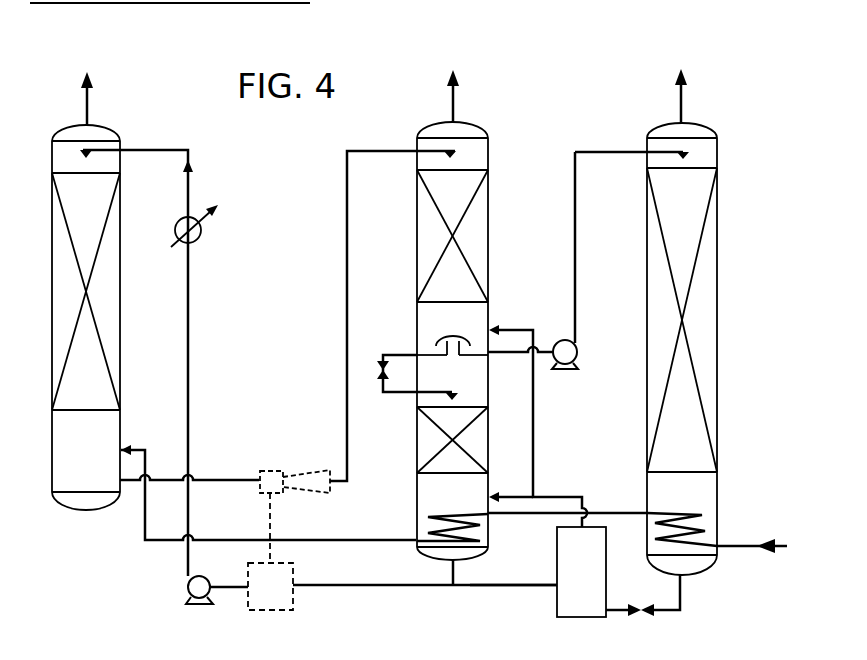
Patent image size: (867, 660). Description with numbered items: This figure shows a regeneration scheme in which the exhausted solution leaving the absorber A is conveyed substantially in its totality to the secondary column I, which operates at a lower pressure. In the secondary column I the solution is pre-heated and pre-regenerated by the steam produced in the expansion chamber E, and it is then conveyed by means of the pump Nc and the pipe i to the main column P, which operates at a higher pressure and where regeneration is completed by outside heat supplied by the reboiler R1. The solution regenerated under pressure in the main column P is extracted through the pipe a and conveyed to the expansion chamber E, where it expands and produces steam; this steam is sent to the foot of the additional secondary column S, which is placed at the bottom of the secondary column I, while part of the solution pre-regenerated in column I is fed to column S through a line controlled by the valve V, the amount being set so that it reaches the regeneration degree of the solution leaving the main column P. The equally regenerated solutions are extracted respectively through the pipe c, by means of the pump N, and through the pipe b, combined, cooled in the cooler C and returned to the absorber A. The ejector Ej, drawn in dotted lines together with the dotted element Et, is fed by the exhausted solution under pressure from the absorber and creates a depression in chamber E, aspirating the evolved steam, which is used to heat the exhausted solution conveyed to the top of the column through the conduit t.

The absorber A is at (74, 291).
The cooler C is at (194, 233).
The vapor pipe t is at (391, 316).
The secondary column I is at (442, 315).
The additional secondary column S is at (441, 474).
The valve V is at (408, 377).
The pipe i is at (520, 361).
The pump Nc is at (580, 260).
The main column P is at (654, 322).
The reboiler R1 is at (717, 533).
The ejector Ej is at (293, 468).
The pump N is at (205, 590).
The heat exchanger Et is at (385, 559).
The pipe b is at (463, 572).
The pipe c is at (513, 572).
The expansion chamber E is at (569, 572).
The pipe a is at (643, 595).